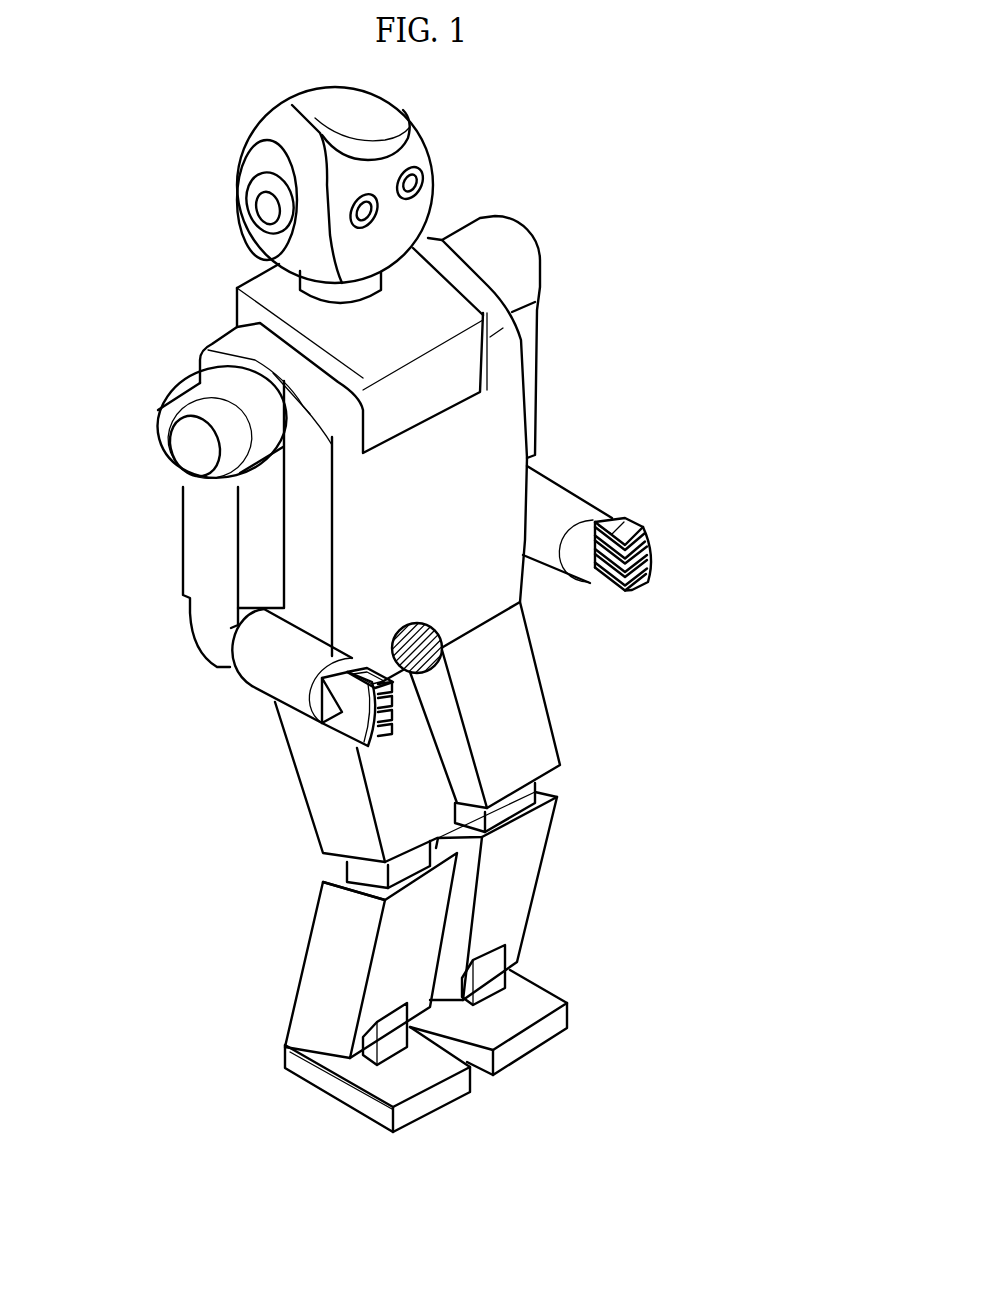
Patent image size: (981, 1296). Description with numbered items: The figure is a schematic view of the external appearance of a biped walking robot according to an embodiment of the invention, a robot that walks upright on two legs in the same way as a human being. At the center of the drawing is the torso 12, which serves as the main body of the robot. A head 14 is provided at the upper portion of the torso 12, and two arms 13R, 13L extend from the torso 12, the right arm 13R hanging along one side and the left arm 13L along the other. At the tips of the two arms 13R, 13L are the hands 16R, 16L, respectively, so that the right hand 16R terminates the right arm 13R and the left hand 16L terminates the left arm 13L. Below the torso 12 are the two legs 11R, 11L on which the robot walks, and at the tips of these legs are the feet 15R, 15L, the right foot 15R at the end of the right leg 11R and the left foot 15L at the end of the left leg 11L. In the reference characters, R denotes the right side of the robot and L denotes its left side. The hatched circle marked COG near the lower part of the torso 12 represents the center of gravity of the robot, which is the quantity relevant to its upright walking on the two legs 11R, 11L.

The head 14 is at (428, 170).
The torso 12 is at (510, 392).
The left arm 13L is at (570, 497).
The right arm 13R is at (200, 610).
The left hand 16L is at (648, 550).
The right hand 16R is at (340, 727).
The center of gravity COG is at (430, 650).
The left leg 11L is at (540, 848).
The right leg 11R is at (323, 913).
The left foot 15L is at (562, 1015).
The right foot 15R is at (340, 1092).